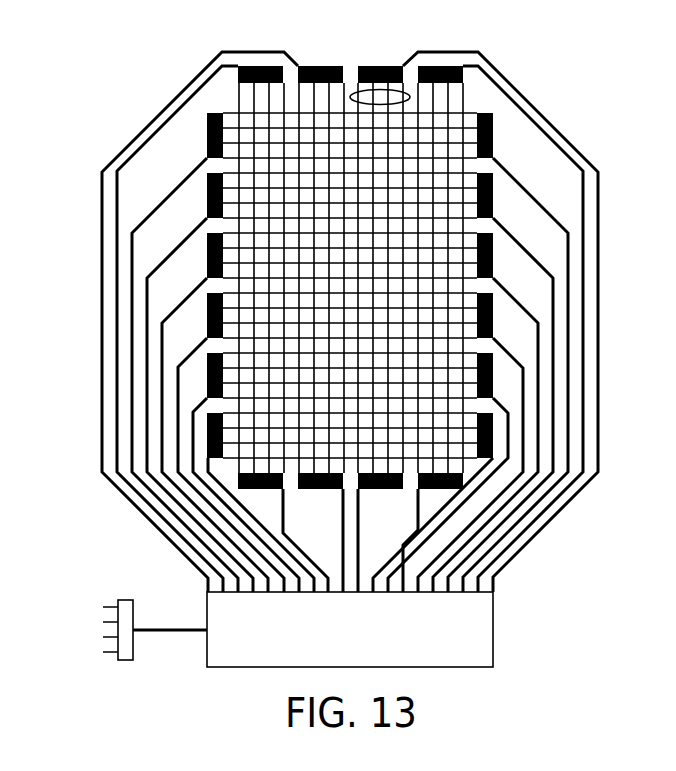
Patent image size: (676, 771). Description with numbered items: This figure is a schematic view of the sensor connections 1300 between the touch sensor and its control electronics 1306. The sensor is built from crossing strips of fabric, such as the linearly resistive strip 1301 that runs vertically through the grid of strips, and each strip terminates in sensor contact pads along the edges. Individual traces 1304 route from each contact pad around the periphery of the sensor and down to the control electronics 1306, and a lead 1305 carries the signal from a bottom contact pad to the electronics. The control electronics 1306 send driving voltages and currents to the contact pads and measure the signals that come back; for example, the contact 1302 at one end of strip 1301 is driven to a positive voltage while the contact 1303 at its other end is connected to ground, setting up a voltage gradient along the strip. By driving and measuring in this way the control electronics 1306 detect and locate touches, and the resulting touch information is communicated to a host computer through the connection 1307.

The sensor system 1300 is at (123, 63).
The linearly resistive strip 1301 is at (350, 100).
The contact 1302 is at (380, 66).
The contact 1303 is at (380, 489).
The conductive wire trace 1304 is at (494, 68).
The electrode lead 1305 is at (358, 547).
The control electronics 1306 is at (493, 667).
The connection 1307 is at (118, 661).